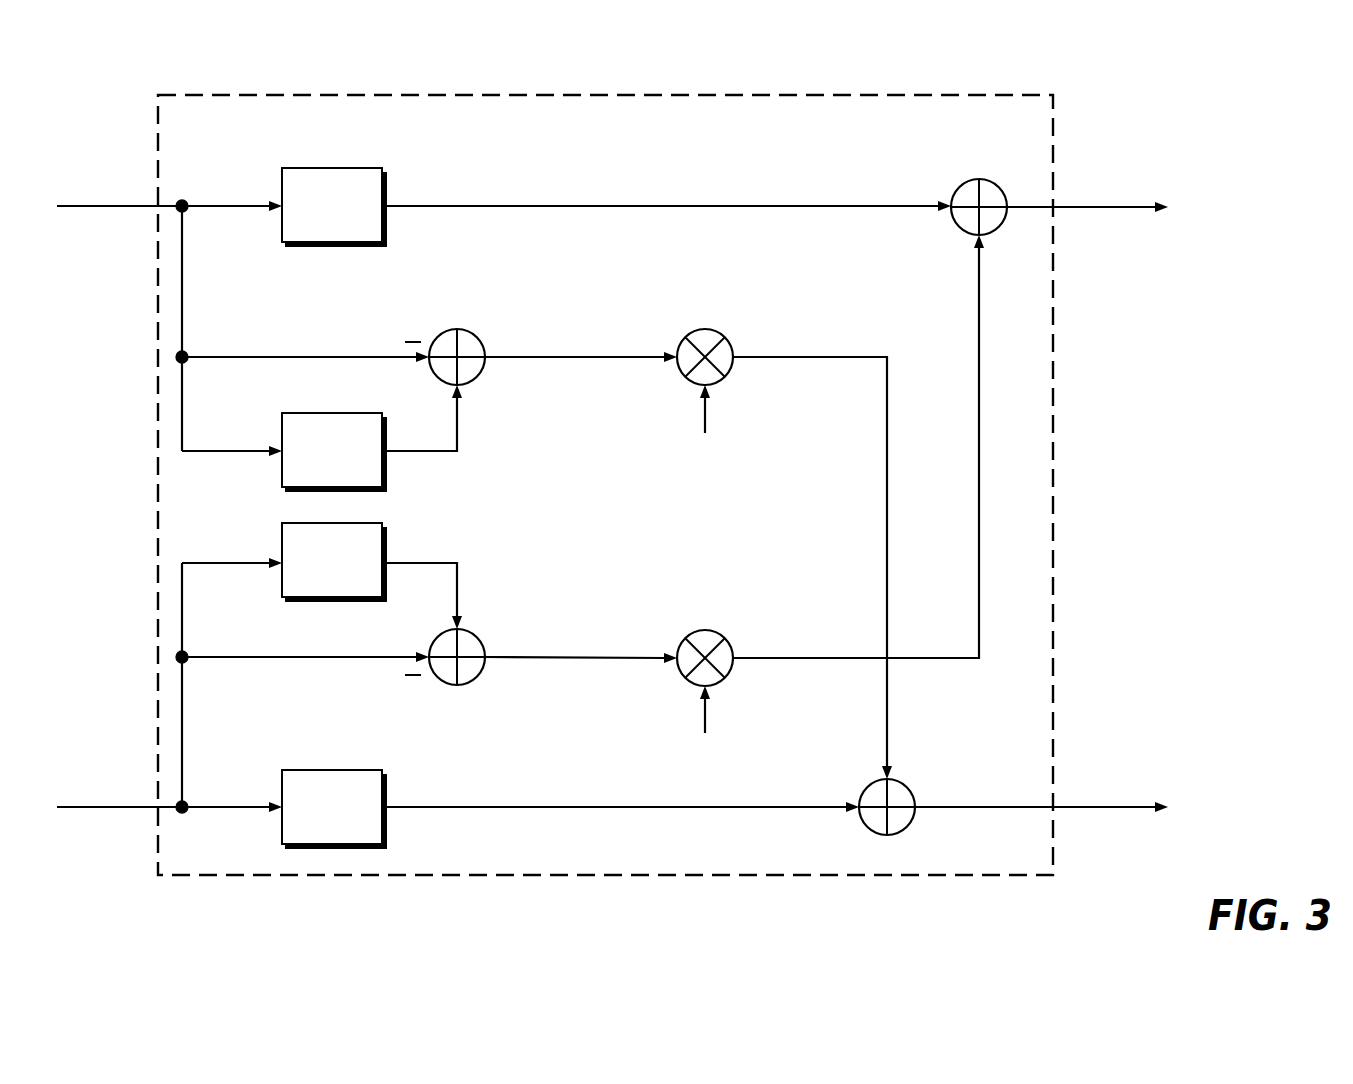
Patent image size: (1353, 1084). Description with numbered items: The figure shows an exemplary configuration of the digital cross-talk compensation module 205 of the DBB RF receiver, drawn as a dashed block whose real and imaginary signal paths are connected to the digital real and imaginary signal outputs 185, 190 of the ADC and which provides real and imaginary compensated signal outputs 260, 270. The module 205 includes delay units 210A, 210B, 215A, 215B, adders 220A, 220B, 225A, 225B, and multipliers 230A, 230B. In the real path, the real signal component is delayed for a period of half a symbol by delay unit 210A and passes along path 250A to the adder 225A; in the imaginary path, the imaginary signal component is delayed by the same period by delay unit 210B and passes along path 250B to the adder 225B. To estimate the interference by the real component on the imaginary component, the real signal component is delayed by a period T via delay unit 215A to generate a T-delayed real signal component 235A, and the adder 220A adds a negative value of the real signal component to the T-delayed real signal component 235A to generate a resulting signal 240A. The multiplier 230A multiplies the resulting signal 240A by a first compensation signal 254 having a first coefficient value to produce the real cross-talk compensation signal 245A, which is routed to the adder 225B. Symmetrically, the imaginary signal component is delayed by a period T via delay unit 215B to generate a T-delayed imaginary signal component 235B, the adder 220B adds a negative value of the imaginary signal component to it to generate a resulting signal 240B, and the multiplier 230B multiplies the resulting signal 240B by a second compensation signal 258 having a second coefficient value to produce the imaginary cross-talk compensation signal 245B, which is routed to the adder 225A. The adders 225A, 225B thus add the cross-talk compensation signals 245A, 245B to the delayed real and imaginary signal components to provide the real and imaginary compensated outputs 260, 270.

The digital real signal output 185 is at (111, 206).
The digital imaginary signal output 190 is at (110, 807).
The digital cross-talk compensation module 205 is at (1053, 122).
The delay unit 210A is at (355, 168).
The delay unit 210B is at (382, 775).
The delay unit 215A is at (382, 470).
The delay unit 215B is at (382, 540).
The adder 220A is at (466, 330).
The adder 220B is at (476, 678).
The adder 225A is at (979, 180).
The adder 225B is at (903, 782).
The multiplier 230A is at (714, 330).
The multiplier 230B is at (712, 631).
The T-delayed real signal component 235A is at (457, 428).
The T-delayed imaginary signal component 235B is at (457, 592).
The resulting signal 240A is at (540, 357).
The resulting signal 240B is at (627, 657).
The real cross-talk compensation signal 245A is at (887, 465).
The imaginary cross-talk compensation signal 245B is at (978, 496).
The delayed I signal to adder 250A is at (670, 206).
The delayed Q signal to adder 250B is at (683, 807).
The first compensation signal 254 is at (705, 415).
The second compensation signal 258 is at (705, 713).
The real compensated signal output 260 is at (1120, 212).
The imaginary compensated signal output 270 is at (1120, 800).